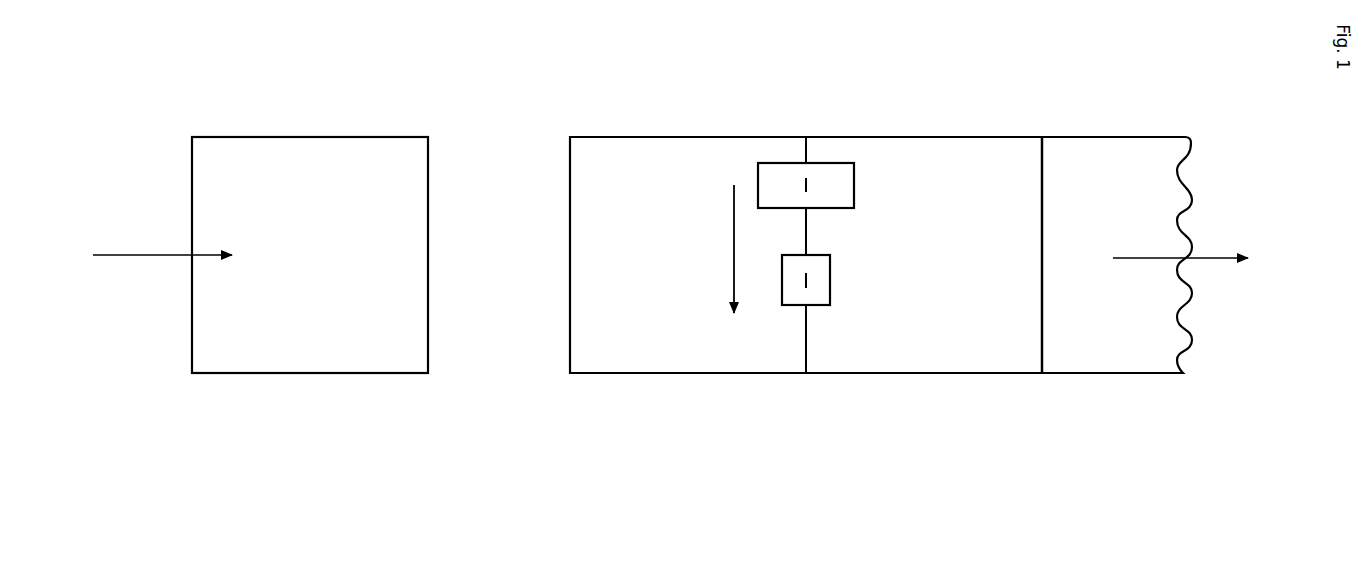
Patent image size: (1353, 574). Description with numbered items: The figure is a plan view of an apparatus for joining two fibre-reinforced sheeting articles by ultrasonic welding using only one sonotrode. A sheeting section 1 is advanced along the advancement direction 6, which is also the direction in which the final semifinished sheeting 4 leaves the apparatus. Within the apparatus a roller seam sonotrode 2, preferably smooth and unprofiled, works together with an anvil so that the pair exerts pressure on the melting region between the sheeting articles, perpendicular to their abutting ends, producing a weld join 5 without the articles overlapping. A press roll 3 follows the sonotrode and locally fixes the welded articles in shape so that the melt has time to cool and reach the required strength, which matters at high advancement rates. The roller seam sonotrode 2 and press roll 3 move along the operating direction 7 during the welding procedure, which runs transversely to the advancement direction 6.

The sheeting section 1 is at (282, 170).
The roller seam sonotrode 2 is at (790, 292).
The press roll 3 is at (825, 185).
The final semifinished sheeting 4 is at (930, 205).
The weld join 5 is at (1040, 340).
The advancement direction of sheeting article and of the final semifinished sheeting 6 is at (152, 255).
The operating direction of roller seam sonotrode and of press roll during ultrasonic 7 is at (725, 268).